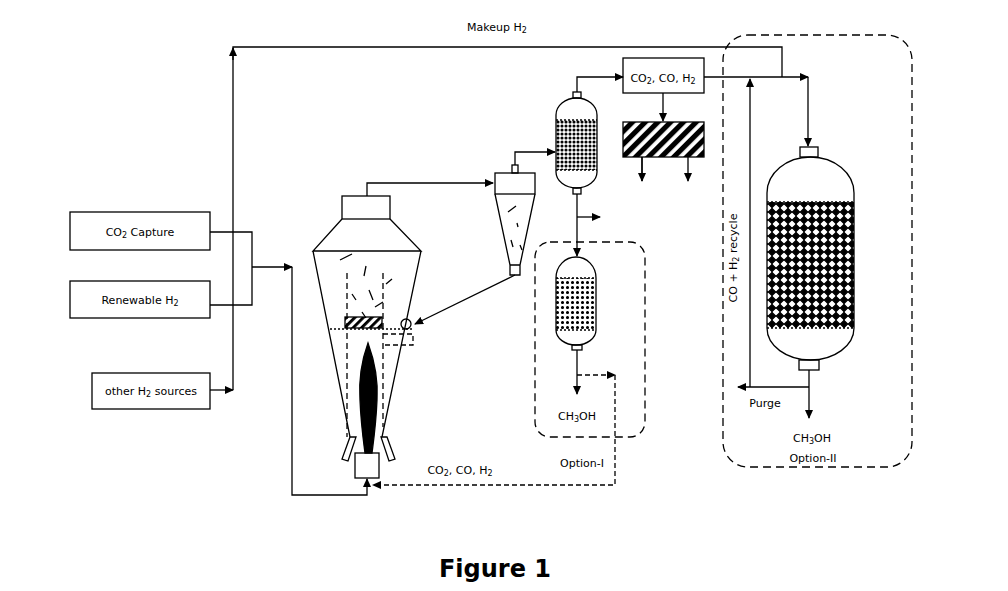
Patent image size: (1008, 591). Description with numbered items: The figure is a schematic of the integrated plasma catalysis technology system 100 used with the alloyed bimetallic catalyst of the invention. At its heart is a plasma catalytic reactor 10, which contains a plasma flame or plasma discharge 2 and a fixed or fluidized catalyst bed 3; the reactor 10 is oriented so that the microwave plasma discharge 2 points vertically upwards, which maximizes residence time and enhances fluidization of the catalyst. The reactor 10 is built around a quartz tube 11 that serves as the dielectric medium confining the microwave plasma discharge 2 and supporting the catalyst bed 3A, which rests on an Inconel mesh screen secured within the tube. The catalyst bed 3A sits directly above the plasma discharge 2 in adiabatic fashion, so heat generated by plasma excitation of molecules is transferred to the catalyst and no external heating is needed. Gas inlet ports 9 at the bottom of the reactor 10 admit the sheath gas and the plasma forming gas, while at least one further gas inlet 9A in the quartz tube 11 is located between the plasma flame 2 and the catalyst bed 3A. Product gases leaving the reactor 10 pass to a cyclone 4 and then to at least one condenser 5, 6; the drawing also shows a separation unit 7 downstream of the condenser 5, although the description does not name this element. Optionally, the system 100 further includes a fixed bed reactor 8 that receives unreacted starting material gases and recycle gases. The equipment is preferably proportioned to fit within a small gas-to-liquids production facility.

The integrated plasma catalysis technology system 100 is at (347, 156).
The plasma catalytic reactor 10 is at (383, 330).
The quartz tube 11 is at (347, 362).
The plasma flame or plasma discharge 2 is at (358, 378).
The fixed or fluidized catalyst bed 3 is at (515, 216).
The catalyst bed 3A is at (389, 318).
The gas inlet ports 9 is at (388, 446).
The gas inlet 9A is at (419, 351).
The cyclone 4 is at (495, 176).
The condenser 5 is at (567, 138).
The condenser 6 is at (568, 302).
The gas separator 7 is at (641, 129).
The fixed bed reactor 8 is at (832, 188).